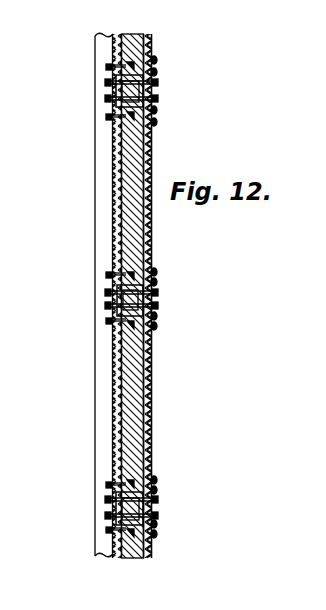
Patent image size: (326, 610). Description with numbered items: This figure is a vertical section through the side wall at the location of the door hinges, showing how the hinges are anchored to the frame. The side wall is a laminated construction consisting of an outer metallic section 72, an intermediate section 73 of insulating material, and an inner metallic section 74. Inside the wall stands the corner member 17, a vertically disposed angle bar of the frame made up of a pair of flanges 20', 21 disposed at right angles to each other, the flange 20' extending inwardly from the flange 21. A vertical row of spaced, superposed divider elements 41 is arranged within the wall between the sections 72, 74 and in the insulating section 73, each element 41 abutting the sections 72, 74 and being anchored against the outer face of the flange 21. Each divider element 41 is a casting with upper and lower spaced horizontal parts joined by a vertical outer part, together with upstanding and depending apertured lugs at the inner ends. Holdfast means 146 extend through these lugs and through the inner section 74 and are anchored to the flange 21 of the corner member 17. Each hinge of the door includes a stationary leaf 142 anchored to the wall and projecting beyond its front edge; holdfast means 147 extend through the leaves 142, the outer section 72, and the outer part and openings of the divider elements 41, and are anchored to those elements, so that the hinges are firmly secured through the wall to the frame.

The corner member 17 is at (93, 218).
The flange 20' is at (70, 295).
The flange 21 is at (112, 348).
The inner metallic section 74 is at (112, 396).
The intermediate section 73 is at (150, 354).
The outer metallic section 72 is at (148, 397).
The divider element 41 is at (137, 67).
The stationary leaf 142 is at (150, 113).
The holdfast means 146 is at (108, 484).
The holdfast means 147 is at (152, 500).